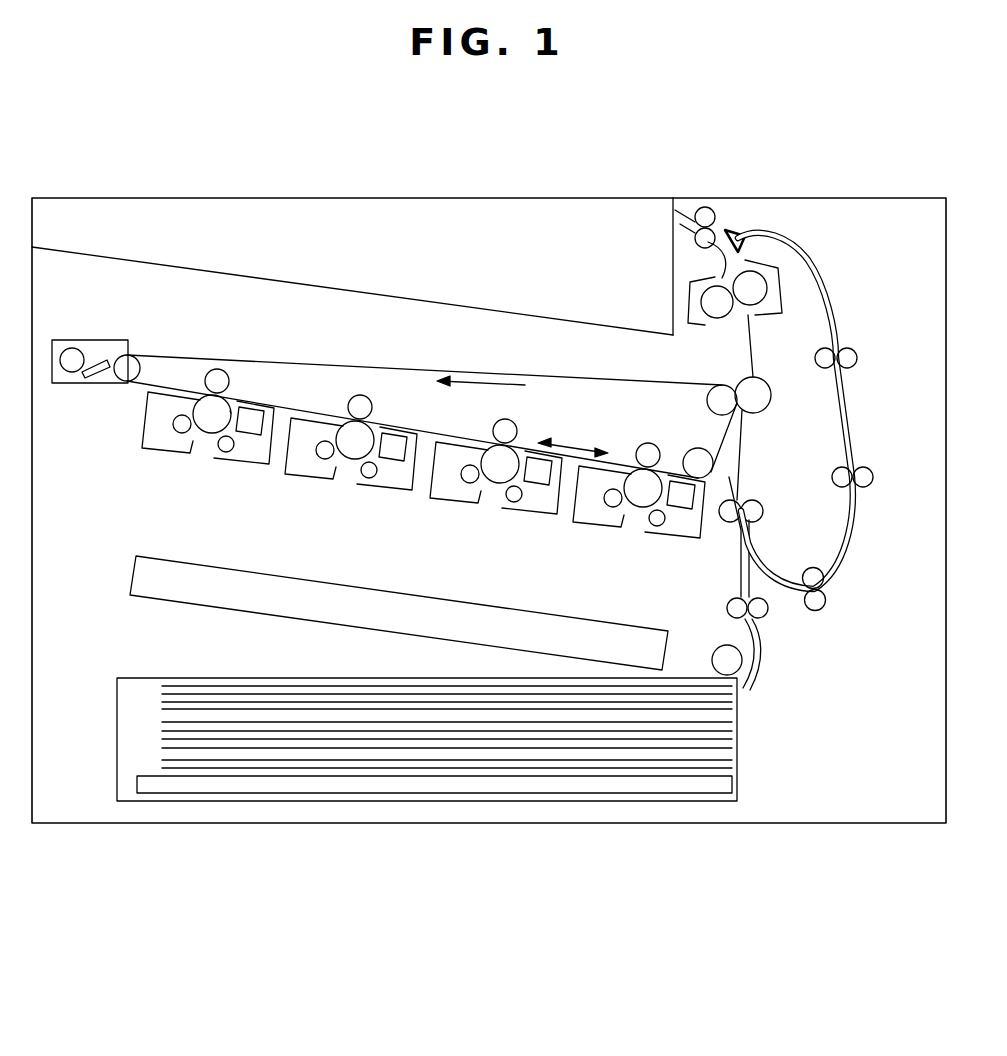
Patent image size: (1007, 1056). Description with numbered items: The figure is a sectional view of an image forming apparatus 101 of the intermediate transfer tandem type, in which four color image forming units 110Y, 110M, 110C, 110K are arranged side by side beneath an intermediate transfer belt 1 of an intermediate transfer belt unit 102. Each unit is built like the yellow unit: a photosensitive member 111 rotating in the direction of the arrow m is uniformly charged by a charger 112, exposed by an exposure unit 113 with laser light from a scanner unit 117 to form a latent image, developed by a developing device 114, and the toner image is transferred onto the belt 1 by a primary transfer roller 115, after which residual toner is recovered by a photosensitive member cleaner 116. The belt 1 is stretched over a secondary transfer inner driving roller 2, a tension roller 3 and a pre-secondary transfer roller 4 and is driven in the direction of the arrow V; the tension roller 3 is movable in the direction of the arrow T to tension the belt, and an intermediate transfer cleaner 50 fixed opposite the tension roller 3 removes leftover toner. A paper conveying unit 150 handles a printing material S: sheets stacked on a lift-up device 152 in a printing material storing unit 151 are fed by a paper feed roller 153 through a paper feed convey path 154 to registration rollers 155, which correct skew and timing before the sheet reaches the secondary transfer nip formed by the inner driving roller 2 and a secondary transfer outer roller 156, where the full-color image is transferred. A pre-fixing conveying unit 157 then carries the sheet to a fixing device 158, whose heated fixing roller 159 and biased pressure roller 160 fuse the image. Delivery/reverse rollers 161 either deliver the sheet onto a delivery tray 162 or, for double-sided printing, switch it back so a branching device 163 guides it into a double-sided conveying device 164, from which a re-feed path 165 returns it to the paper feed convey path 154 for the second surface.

The image forming apparatus 101 is at (403, 197).
The intermediate transfer belt 1 is at (392, 364).
The intermediate transfer belt unit 102 is at (446, 381).
The secondary transfer inner driving roller 2 is at (722, 386).
The tension roller 3 is at (130, 366).
The pre-secondary transfer roller 4 is at (710, 473).
The intermediate transfer cleaner 50 is at (102, 345).
The rotation direction of photosensitive member m is at (244, 349).
The image forming unit 110Y is at (184, 418).
The image forming unit 110M is at (283, 493).
The image forming unit 110C is at (432, 518).
The image forming unit 110K is at (575, 541).
The photosensitive member 111 is at (191, 359).
The charger 112 is at (238, 476).
The exposure unit 113 is at (171, 454).
The developing device 114 is at (128, 430).
The primary transfer roller 115 is at (212, 352).
The photosensitive member cleaner 116 is at (258, 387).
The scanner unit 117 is at (147, 578).
The paper conveying unit 150 is at (744, 453).
The printing material storing unit 151 is at (415, 786).
The lift-up device 152 is at (185, 786).
The paper feed roller 153 is at (737, 662).
The paper feed convey path 154 is at (740, 572).
The registration rollers 155 is at (753, 511).
The secondary transfer outer roller 156 is at (758, 398).
The pre-fixing conveying unit 157 is at (742, 350).
The fixing device 158 is at (783, 275).
The fixing roller 159 is at (700, 302).
The pressure roller 160 is at (760, 298).
The delivery/reverse rollers 161 is at (708, 206).
The delivery tray 162 is at (382, 292).
The branching device 163 is at (742, 233).
The double-sided conveying device 164 is at (840, 410).
The re-feed path 165 is at (795, 411).
The printing material S is at (725, 710).
The movement direction of tension roller T is at (573, 438).
The conveying direction of intermediate transfer belt V is at (481, 393).